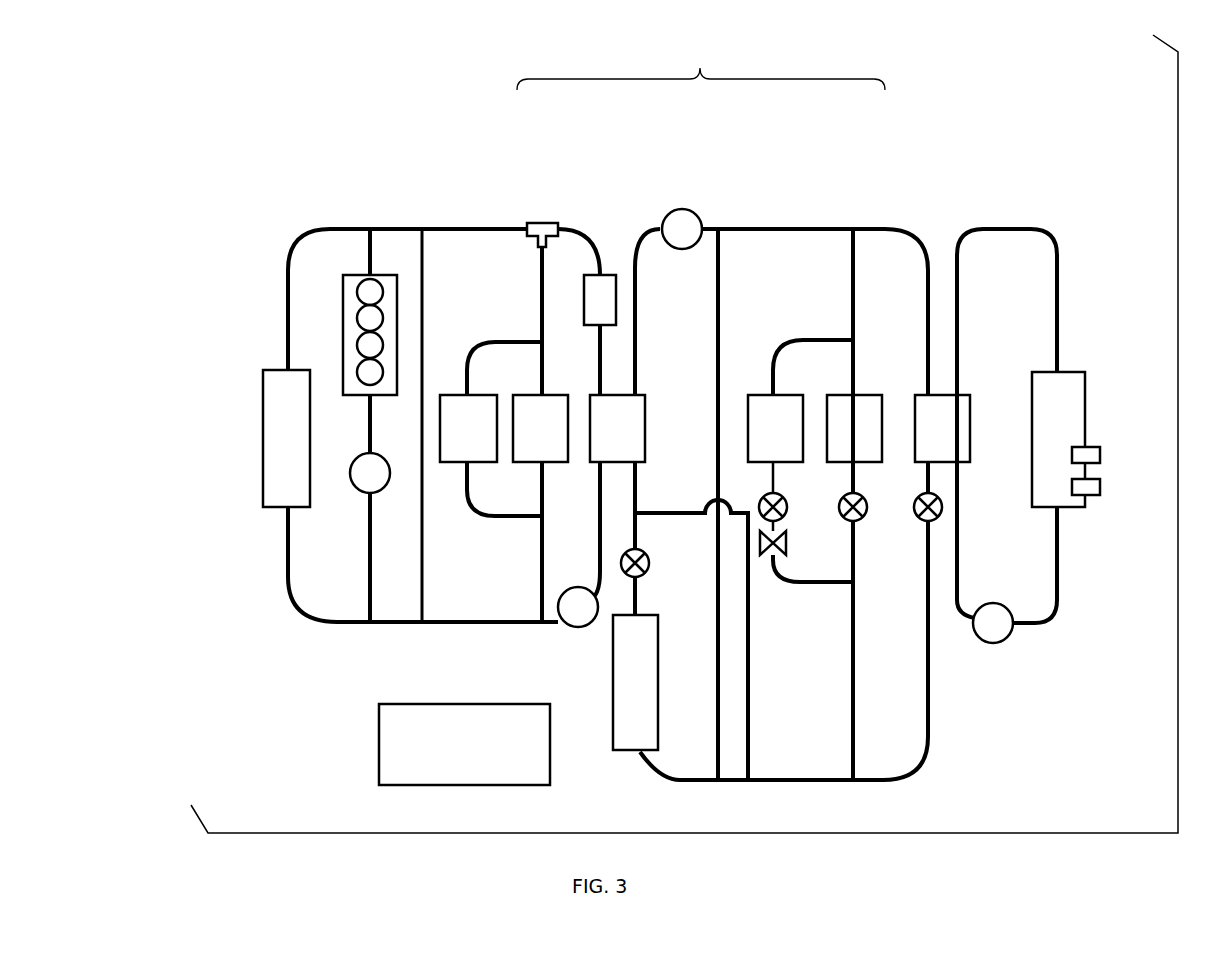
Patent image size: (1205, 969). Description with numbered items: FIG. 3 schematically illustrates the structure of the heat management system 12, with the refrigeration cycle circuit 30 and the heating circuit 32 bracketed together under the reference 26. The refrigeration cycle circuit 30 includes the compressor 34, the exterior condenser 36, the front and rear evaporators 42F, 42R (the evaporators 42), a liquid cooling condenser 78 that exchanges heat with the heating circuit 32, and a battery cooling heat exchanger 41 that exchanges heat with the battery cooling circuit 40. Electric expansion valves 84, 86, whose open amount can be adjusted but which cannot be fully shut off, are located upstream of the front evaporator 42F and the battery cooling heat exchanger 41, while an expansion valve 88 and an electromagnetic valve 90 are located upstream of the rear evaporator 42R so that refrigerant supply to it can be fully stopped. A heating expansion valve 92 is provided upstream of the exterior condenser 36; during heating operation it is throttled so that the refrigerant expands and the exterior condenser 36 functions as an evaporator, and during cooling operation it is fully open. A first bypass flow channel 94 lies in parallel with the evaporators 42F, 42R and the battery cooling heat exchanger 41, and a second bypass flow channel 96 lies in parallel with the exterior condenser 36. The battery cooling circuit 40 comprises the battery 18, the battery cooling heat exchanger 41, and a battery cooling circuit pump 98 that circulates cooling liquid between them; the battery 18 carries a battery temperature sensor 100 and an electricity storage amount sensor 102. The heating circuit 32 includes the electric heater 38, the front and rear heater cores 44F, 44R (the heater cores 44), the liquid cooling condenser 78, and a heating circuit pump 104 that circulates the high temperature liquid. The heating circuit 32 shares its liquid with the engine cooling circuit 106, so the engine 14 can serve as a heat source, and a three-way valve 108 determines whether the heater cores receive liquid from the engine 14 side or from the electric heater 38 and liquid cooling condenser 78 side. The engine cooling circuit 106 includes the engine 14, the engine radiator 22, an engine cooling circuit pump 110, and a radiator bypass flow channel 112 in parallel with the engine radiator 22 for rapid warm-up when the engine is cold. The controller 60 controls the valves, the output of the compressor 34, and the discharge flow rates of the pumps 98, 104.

The heat management system 12 is at (935, 138).
The engine 14 is at (383, 280).
The battery 18 is at (1068, 372).
The engine radiator 22 is at (273, 370).
The cabin climate control loop 26 is at (701, 64).
The refrigeration cycle circuit 30 is at (812, 185).
The heating circuit 32 is at (570, 185).
The compressor 34 is at (693, 210).
The exterior condenser 36 is at (613, 700).
The electric heater 38 is at (613, 230).
The battery cooling circuit 40 is at (1017, 185).
The battery cooling heat exchanger 41 is at (970, 410).
The evaporator 42 is at (820, 504).
The rear evaporator 42R is at (763, 395).
The front evaporator 42F is at (865, 395).
The heater core 44 is at (515, 482).
The rear heater core 44R is at (455, 462).
The front heater core 44F is at (552, 462).
The controller 60 is at (379, 757).
The liquid cooling condenser 78 is at (645, 420).
The electric expansion valve 84 is at (790, 539).
The electric expansion valve 86 is at (915, 517).
The expansion valve 88 is at (785, 497).
The electromagnetic valve 90 is at (762, 555).
The heating expansion valve 92 is at (649, 566).
The first bypass flow channel 94 is at (745, 230).
The second bypass flow channel 96 is at (748, 690).
The battery cooling circuit pump 98 is at (1008, 638).
The battery temperature sensor 100 is at (1092, 495).
The electricity storage amount sensor 102 is at (1091, 447).
The heating circuit pump 104 is at (568, 625).
The engine cooling circuit 106 is at (307, 222).
The three-way valve 108 is at (540, 222).
The engine cooling circuit pump 110 is at (356, 488).
The radiator bypass flow channel 112 is at (422, 560).